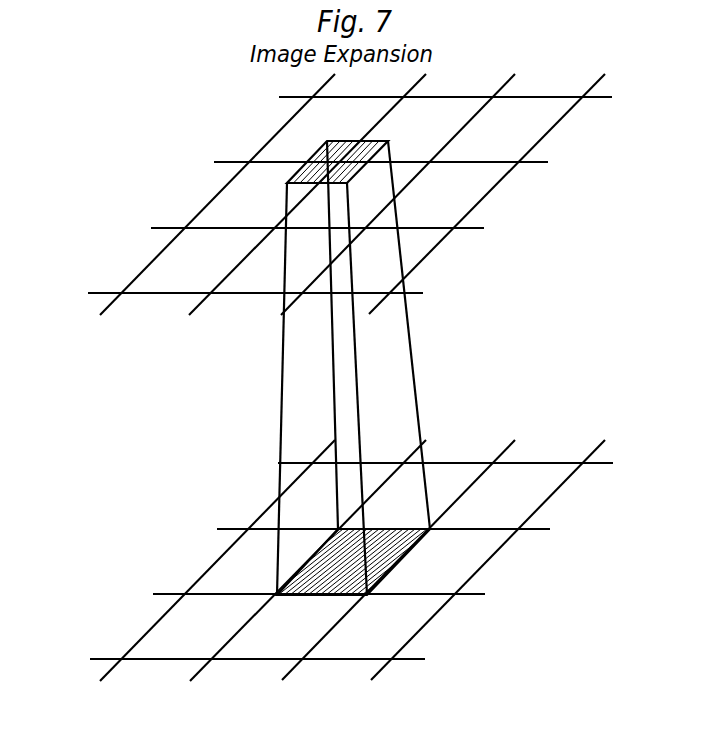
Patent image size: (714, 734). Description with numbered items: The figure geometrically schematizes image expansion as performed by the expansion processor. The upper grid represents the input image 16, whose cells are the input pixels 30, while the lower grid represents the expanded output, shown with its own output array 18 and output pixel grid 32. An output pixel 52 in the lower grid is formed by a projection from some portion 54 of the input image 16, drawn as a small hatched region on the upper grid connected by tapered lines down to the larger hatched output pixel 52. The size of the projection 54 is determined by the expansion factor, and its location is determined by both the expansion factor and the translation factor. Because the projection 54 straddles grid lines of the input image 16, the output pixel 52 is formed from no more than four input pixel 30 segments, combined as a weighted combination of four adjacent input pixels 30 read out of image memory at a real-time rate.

The input image 16 is at (340, 194).
The output image pixel array 18 is at (339, 560).
The input pixels 30 is at (156, 268).
The output pixel grid lines 32 is at (158, 637).
The projection 54 is at (364, 138).
The output pixel 52 is at (371, 526).